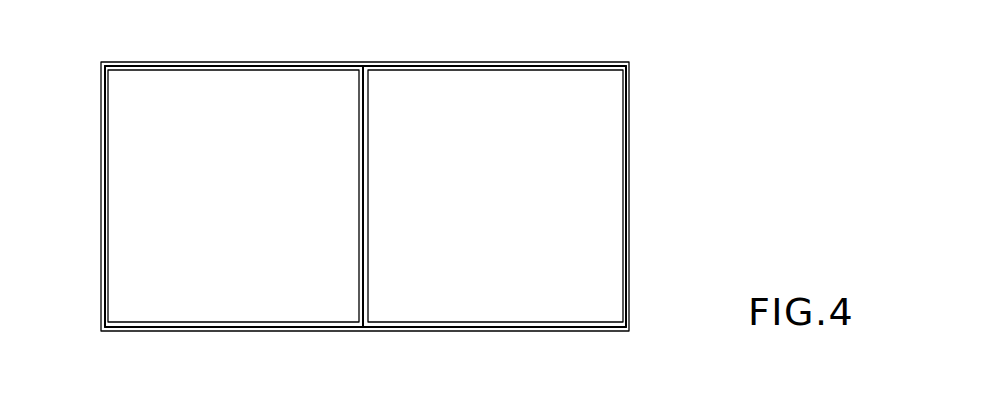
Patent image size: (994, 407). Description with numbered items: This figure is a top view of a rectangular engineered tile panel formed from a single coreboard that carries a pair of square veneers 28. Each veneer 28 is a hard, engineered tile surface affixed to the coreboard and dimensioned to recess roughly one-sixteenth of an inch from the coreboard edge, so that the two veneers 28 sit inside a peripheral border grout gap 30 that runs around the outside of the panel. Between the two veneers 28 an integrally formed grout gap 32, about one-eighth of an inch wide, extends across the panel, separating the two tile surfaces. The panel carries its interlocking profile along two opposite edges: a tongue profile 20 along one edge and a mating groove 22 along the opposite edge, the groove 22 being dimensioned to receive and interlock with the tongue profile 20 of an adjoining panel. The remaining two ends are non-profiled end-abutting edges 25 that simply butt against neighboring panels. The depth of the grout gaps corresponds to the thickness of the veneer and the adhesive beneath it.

The tongue profile 20 is at (150, 62).
The groove 22 is at (404, 333).
The non-profiled end-abutting edge 25 is at (104, 181).
The veneer 28 is at (254, 100).
The grout gap border 30 is at (455, 68).
The grout gap 32 is at (356, 302).